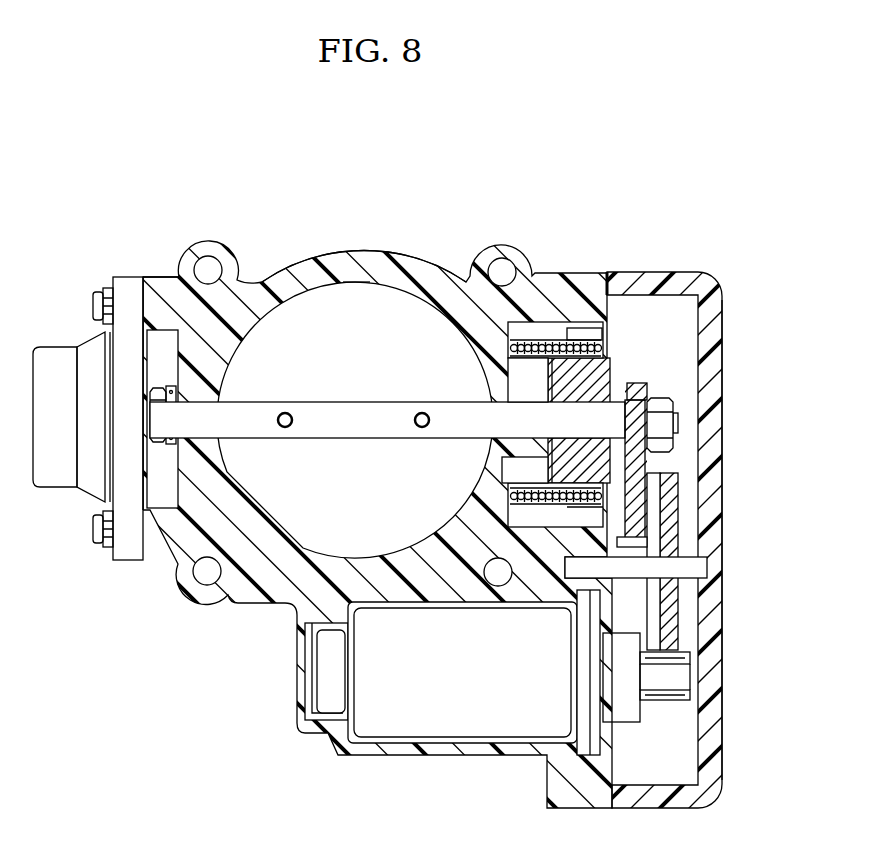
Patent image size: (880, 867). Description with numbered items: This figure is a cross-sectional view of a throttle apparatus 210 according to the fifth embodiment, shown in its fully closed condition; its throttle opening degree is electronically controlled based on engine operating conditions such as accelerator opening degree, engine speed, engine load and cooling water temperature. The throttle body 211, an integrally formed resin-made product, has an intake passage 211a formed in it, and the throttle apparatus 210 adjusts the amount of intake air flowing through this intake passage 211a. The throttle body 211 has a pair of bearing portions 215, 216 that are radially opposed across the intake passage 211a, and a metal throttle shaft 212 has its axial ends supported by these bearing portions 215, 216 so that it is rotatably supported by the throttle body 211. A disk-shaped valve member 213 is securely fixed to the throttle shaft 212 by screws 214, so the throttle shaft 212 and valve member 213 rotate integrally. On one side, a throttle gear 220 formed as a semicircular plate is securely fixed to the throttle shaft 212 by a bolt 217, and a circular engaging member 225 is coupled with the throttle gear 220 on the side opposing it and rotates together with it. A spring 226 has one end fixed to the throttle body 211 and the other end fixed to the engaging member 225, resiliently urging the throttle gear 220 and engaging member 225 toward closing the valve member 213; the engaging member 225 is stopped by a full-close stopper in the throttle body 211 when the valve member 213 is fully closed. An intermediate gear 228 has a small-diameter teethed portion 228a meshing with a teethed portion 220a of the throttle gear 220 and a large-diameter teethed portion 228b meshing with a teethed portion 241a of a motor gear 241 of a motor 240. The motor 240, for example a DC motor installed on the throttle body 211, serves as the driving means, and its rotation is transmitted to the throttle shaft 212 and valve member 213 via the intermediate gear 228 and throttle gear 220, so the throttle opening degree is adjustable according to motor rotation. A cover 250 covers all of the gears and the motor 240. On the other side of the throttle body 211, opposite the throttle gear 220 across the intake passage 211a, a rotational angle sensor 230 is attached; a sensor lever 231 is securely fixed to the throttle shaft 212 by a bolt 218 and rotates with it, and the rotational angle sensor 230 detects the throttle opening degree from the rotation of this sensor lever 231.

The throttle apparatus 210 is at (195, 618).
The throttle body 211 is at (340, 263).
The intake passage 211a is at (397, 245).
The throttle shaft 212 is at (327, 417).
The valve member 213 is at (402, 320).
The screws 214 is at (423, 413).
The bearing portion 215 is at (515, 393).
The bearing portion 216 is at (198, 385).
The bolt 217 is at (677, 418).
The bolt 218 is at (157, 442).
The throttle gear 220 is at (682, 298).
The teethed portion 220a is at (628, 546).
The engaging member 225 is at (633, 383).
The spring 226 is at (550, 347).
The intermediate gear 228 is at (670, 612).
The small-diameter teethed portion 228a is at (640, 543).
The large-diameter teethed portion 228b is at (672, 471).
The rotational angle sensor 230 is at (54, 331).
The sensor lever 231 is at (133, 363).
The motor 240 is at (405, 730).
The motor gear 241 is at (665, 682).
The teethed portion 241a is at (678, 698).
The cover 250 is at (713, 363).